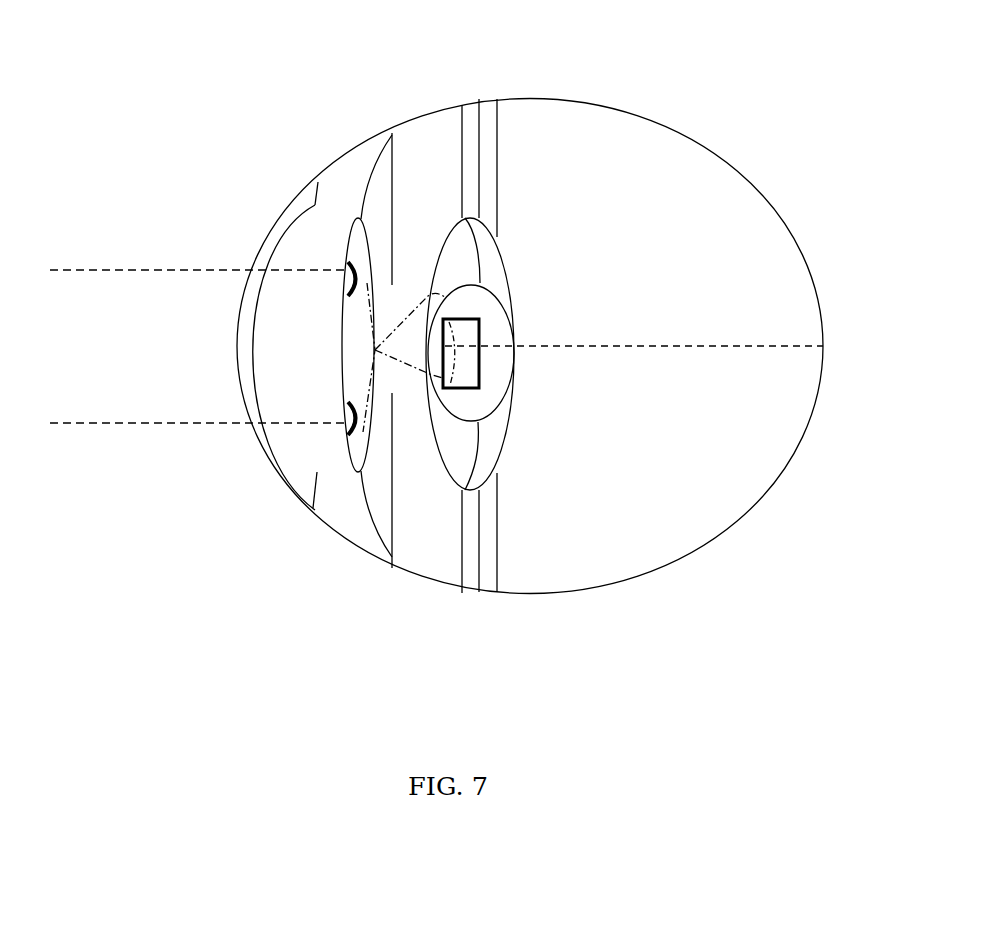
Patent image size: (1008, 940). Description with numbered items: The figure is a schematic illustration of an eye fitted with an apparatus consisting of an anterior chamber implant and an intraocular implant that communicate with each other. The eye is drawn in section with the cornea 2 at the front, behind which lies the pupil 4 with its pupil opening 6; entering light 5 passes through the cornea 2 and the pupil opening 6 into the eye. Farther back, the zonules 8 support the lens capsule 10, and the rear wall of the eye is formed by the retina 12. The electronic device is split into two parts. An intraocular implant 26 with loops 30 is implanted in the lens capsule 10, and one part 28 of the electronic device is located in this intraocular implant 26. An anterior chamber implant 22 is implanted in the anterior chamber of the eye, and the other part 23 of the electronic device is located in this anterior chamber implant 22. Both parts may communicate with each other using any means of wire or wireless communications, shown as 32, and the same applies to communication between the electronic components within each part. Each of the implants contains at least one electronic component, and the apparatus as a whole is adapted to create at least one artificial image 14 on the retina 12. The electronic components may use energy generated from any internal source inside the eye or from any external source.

The cornea 2 is at (307, 475).
The pupil 4 is at (393, 182).
The entering light 5 is at (133, 423).
The pupil opening 6 is at (393, 393).
The zonules 8 is at (497, 528).
The lens capsule 10 is at (497, 442).
The retina 12 is at (738, 177).
The artificial image 14 is at (823, 346).
The anterior chamber implant 22 is at (350, 357).
The other part of electronic device 23 is at (351, 263).
The intraocular implant 26 is at (497, 390).
The part of electronic device 28 is at (480, 317).
The loops 30 is at (482, 243).
The wire or wireless communications 32 is at (410, 315).